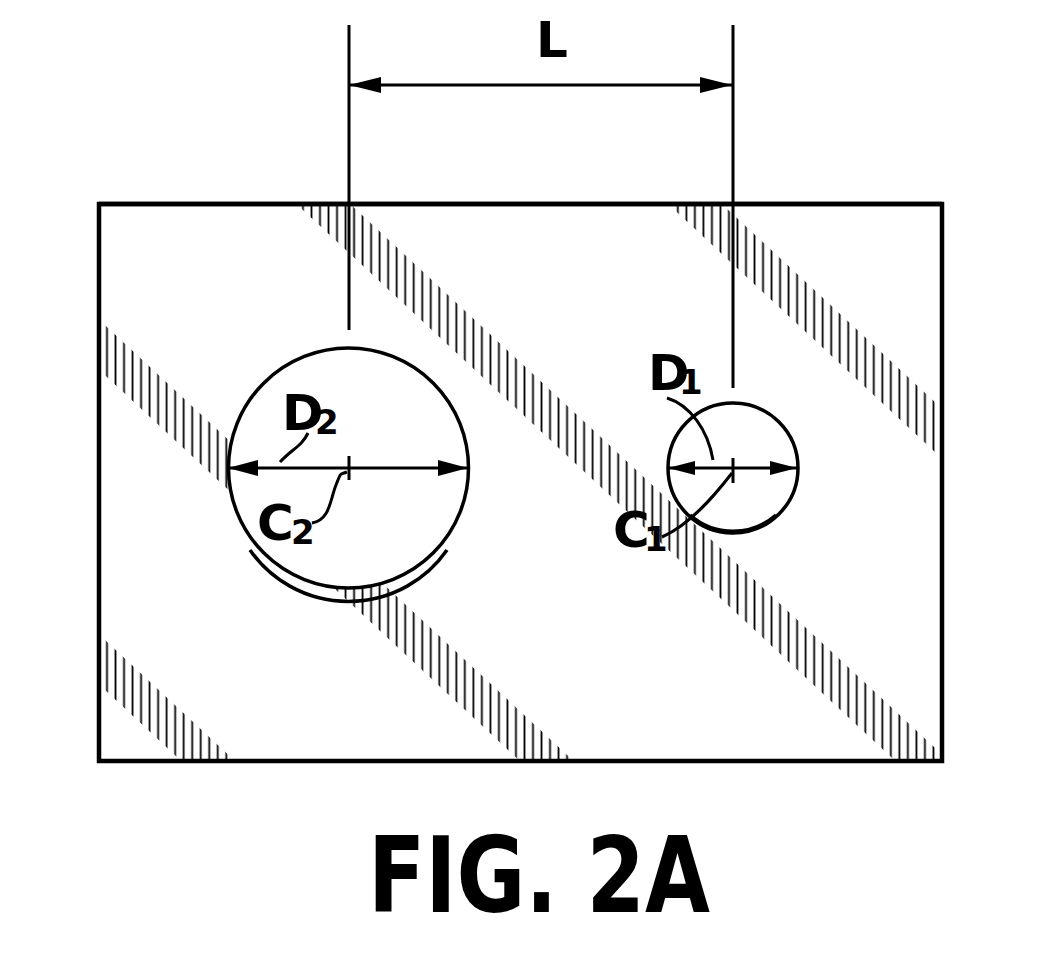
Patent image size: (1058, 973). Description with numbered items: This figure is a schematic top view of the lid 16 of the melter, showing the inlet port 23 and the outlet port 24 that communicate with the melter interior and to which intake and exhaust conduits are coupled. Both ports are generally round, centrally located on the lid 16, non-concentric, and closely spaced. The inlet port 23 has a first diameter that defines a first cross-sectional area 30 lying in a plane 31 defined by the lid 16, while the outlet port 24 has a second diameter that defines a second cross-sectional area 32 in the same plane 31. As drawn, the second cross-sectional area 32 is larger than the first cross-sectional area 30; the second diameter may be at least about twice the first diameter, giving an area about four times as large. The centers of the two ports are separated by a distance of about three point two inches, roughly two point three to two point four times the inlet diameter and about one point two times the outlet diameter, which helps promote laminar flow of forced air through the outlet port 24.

The lid 16 is at (927, 190).
The plane 31 is at (159, 204).
The outlet port 24 is at (437, 552).
The second cross-sectional area 32 is at (362, 553).
The inlet port 23 is at (780, 513).
The first cross-sectional area 30 is at (742, 515).